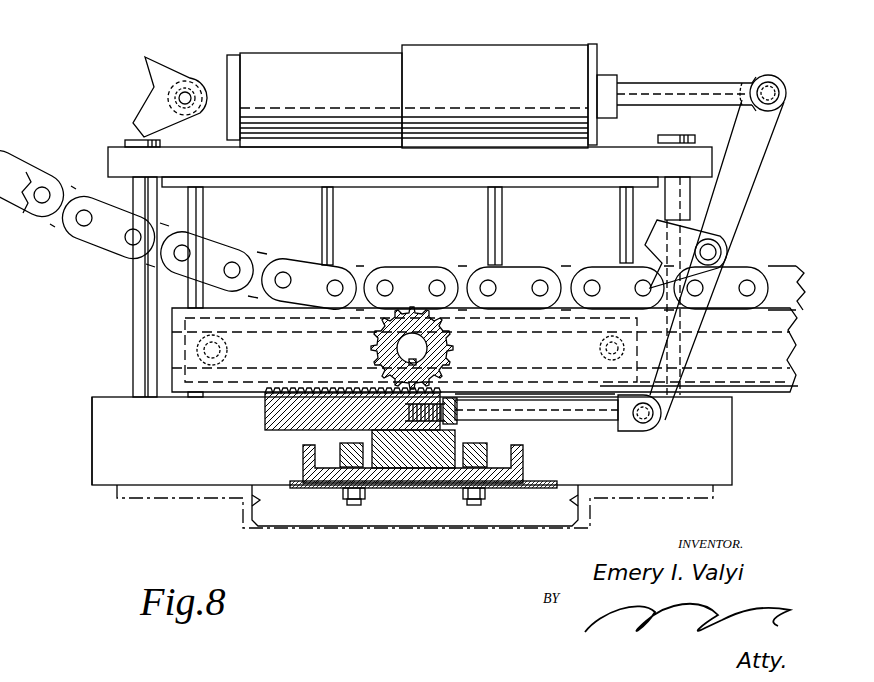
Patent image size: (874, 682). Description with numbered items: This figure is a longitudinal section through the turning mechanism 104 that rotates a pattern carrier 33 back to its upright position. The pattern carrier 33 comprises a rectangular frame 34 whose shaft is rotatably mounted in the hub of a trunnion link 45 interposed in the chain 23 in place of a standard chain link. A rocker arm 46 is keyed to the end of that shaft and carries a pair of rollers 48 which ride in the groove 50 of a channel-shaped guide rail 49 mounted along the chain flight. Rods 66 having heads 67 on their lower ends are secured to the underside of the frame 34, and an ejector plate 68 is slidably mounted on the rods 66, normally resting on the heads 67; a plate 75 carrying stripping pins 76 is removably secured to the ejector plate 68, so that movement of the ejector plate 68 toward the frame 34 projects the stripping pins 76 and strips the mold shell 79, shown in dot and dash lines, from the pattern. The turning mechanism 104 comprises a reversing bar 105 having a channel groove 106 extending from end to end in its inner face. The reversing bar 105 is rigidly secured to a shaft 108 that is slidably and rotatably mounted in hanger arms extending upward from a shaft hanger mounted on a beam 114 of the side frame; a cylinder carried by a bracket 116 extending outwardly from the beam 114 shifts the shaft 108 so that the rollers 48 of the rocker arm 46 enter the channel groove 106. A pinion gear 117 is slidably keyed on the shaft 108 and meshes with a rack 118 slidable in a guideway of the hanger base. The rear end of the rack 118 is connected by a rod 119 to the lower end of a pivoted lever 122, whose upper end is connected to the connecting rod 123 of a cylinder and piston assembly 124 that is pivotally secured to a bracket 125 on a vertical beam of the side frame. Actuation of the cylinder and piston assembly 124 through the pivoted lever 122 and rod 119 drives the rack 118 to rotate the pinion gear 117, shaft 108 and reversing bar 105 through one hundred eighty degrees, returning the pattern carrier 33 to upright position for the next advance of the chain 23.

The chain 23 is at (212, 255).
The pattern carrier 33 is at (92, 468).
The rectangular frame 34 is at (163, 453).
The trunnion link 45 is at (415, 288).
The rocker arm 46 is at (230, 405).
The roller 48 is at (230, 350).
The guide rail 49 is at (780, 378).
The groove 50 is at (745, 357).
The rod 66 is at (712, 197).
The head 67 is at (121, 140).
The ejector plate 68 is at (432, 168).
The plate 75 is at (288, 187).
The stripping pin 76 is at (333, 240).
The mold shell 79 is at (188, 500).
The turning mechanism 104 is at (498, 346).
The reversing bar 105 is at (302, 343).
The channel groove 106 is at (530, 333).
The shaft 108 is at (427, 350).
The beam 114 is at (398, 488).
The bracket 116 is at (523, 455).
The pinion gear 117 is at (374, 348).
The rack 118 is at (280, 428).
The rod 119 is at (589, 436).
The pivoted lever 122 is at (736, 226).
The connecting rod 123 is at (678, 92).
The cylinder and piston assembly 124 is at (462, 60).
The bracket 125 is at (165, 75).